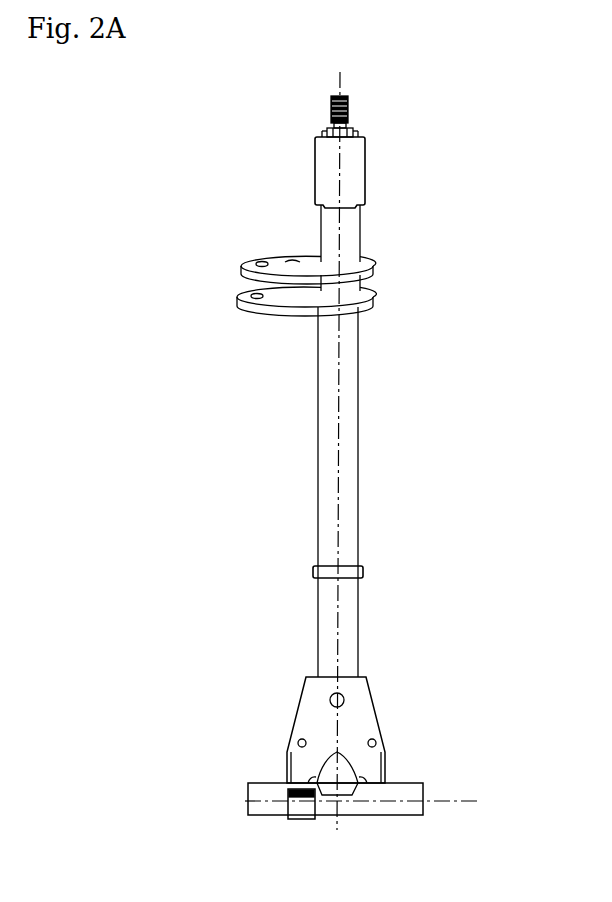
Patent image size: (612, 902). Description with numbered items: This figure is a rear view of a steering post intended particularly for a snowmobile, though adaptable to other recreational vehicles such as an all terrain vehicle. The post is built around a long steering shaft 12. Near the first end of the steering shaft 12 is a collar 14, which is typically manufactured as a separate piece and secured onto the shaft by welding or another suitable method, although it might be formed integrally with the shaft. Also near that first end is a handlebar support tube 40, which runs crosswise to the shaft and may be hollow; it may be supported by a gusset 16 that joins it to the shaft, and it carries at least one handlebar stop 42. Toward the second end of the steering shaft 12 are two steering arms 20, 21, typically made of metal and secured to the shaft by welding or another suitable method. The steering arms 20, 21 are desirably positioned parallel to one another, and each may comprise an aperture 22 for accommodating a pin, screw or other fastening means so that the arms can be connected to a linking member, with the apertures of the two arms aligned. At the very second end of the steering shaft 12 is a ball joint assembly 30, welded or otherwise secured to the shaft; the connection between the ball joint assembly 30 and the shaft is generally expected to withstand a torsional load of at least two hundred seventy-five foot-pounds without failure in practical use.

The steering shaft 12 is at (318, 443).
The collar 14 is at (313, 570).
The gusset 16 is at (298, 720).
The steering arm 20 is at (240, 291).
The steering arm 21 is at (293, 262).
The aperture 22 is at (261, 261).
The ball joint assembly 30 is at (316, 186).
The handlebar support tube 40 is at (248, 793).
The handlebar stop 42 is at (298, 819).